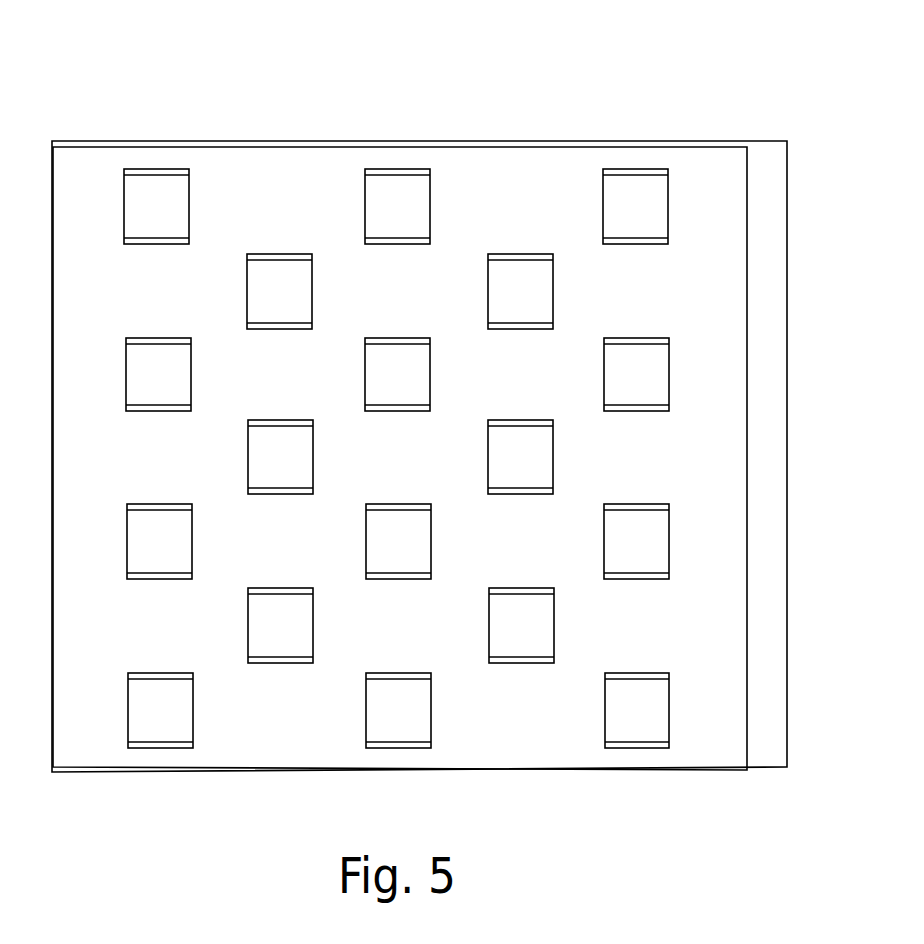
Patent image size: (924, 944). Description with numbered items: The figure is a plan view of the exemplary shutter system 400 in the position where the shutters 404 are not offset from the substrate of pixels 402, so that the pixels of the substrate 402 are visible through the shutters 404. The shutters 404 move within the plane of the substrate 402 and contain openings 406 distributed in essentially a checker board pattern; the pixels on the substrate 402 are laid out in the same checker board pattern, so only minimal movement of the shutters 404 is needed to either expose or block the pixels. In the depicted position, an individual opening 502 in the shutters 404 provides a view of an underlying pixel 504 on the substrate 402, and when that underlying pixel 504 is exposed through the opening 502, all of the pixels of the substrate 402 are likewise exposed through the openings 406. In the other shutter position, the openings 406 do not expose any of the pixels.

The shutter system 400 is at (486, 424).
The substrate of pixels 402 is at (787, 522).
The shutters 404 is at (745, 297).
The openings 406 is at (511, 449).
The opening 502 is at (752, 724).
The underlying pixel 504 is at (630, 742).